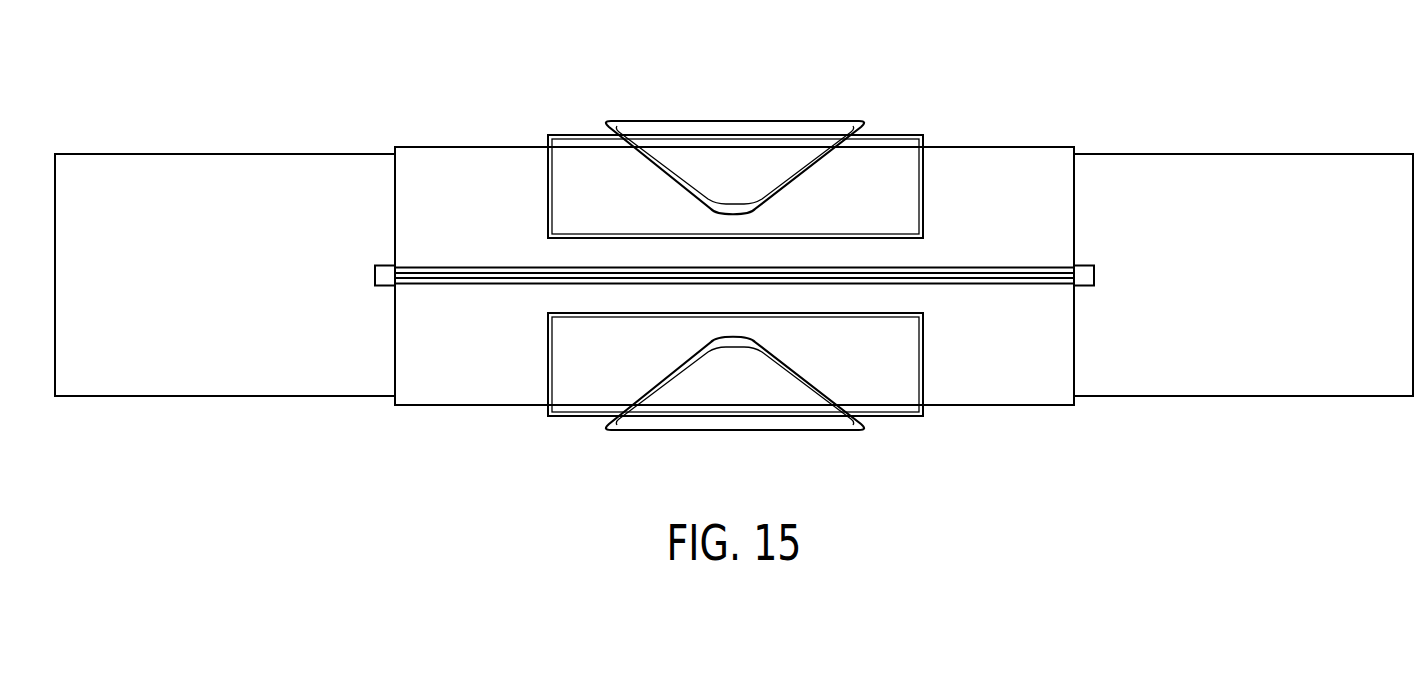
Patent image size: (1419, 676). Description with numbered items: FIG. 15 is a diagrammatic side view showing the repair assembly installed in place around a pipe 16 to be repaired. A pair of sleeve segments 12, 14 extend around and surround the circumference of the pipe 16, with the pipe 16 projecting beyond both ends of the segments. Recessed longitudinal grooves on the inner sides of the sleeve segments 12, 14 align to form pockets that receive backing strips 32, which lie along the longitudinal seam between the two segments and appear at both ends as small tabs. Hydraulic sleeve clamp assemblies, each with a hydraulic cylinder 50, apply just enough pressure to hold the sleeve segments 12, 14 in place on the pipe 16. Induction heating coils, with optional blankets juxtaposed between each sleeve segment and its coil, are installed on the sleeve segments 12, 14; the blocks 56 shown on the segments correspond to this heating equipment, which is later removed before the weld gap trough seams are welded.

The sleeve segment 12 is at (997, 152).
The sleeve segment 14 is at (1004, 388).
The pipe 16 is at (310, 383).
The backing strip 32 is at (382, 273).
The hydraulic cylinder 50 is at (730, 132).
The insert block 56 is at (890, 143).